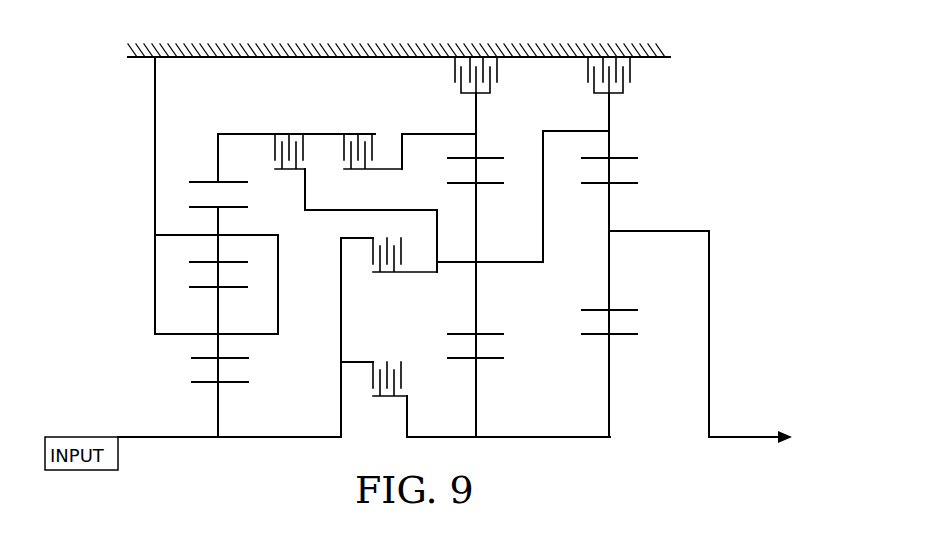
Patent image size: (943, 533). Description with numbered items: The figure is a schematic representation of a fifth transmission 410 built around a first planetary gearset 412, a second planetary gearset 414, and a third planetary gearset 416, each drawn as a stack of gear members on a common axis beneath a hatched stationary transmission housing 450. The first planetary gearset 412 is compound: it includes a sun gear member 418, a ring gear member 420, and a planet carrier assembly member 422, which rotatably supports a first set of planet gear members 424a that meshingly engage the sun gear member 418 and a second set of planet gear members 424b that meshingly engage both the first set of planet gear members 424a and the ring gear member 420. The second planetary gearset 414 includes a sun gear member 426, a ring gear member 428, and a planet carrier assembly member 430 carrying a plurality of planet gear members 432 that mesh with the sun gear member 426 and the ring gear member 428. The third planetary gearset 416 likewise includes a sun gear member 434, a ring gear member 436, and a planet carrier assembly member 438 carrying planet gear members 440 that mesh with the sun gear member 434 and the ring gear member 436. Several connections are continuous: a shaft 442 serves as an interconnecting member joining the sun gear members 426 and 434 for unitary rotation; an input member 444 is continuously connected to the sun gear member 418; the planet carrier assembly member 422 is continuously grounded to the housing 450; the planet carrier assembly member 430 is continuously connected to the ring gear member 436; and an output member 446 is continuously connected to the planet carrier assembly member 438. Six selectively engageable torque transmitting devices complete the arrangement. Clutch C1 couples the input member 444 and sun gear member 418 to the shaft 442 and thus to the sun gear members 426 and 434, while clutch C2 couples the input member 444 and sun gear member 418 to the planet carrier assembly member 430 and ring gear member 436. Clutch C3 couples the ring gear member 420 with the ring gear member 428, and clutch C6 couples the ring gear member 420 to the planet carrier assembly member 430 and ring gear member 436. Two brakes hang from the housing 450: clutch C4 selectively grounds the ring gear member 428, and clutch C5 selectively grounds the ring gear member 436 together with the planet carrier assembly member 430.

The transmission 410 is at (752, 123).
The first planetary gearset 412 is at (130, 368).
The second planetary gearset 414 is at (515, 395).
The third planetary gearset 416 is at (665, 178).
The sun gear member 418 is at (200, 383).
The ring gear member 420 is at (205, 182).
The planet carrier assembly member 422 is at (155, 283).
The first set of planet gear members 424a is at (237, 360).
The second set of planet gear members 424b is at (245, 265).
The sun gear member 426 is at (492, 356).
The ring gear member 428 is at (458, 160).
The planet carrier assembly member 430 is at (501, 265).
The planet gear members 432 is at (492, 185).
The sun gear member 434 is at (630, 333).
The ring gear member 436 is at (630, 156).
The planet carrier assembly member 438 is at (670, 233).
The planet gear members 440 is at (590, 185).
The shaft 442 is at (596, 440).
The input member 444 is at (167, 440).
The output member 446 is at (742, 434).
The transmission housing 450 is at (660, 46).
The clutch C1 is at (416, 370).
The clutch C2 is at (362, 240).
The clutch C3 is at (330, 143).
The brake C4 is at (442, 64).
The brake C5 is at (569, 64).
The clutch C6 is at (260, 143).